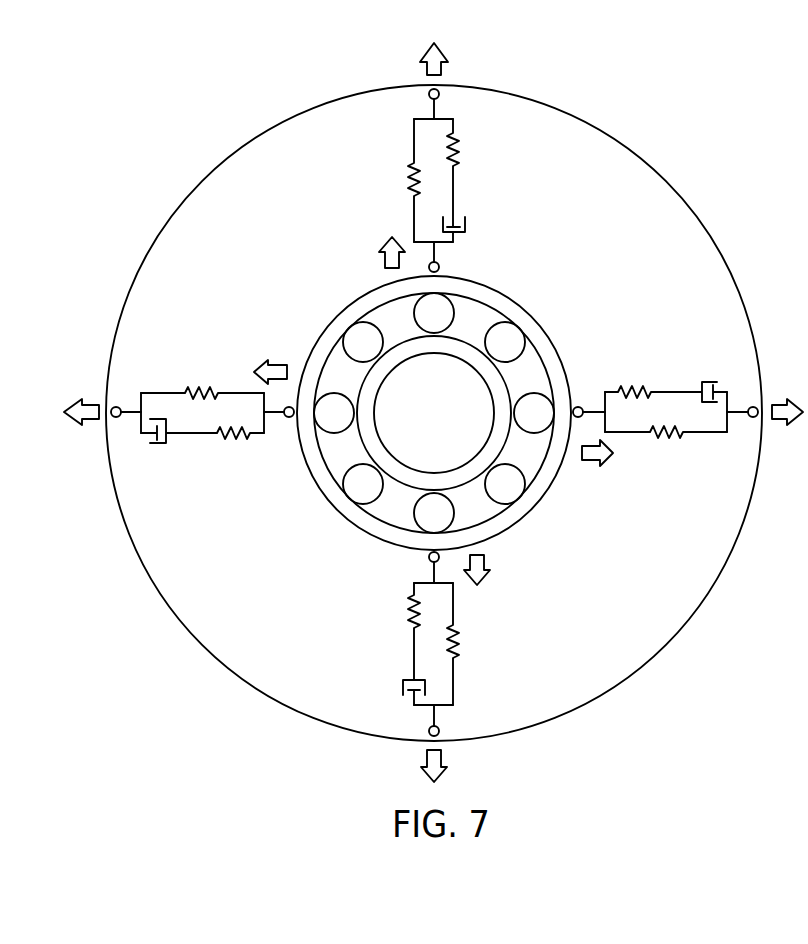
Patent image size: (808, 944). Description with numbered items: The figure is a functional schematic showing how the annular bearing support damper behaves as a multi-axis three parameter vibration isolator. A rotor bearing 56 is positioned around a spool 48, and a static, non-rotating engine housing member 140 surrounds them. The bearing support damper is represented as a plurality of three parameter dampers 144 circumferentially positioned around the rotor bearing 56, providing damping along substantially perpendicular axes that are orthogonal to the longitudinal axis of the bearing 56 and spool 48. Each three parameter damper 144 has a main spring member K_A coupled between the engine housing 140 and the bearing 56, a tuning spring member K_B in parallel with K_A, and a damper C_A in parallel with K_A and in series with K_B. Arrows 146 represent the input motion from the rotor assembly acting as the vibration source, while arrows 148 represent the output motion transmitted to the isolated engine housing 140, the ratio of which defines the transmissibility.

The engine housing member 140 is at (620, 137).
The rotor bearing 56 is at (450, 398).
The spool 48 is at (418, 425).
The three parameter damper 144 is at (414, 145).
The input motion arrows 146 is at (385, 260).
The output motion arrows 148 is at (421, 68).